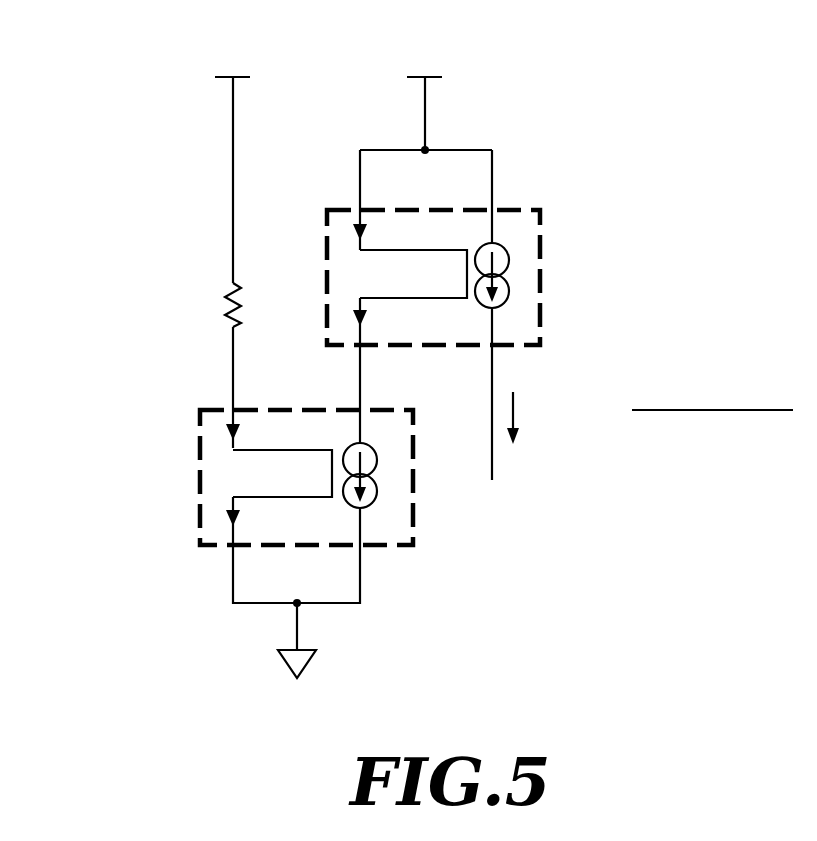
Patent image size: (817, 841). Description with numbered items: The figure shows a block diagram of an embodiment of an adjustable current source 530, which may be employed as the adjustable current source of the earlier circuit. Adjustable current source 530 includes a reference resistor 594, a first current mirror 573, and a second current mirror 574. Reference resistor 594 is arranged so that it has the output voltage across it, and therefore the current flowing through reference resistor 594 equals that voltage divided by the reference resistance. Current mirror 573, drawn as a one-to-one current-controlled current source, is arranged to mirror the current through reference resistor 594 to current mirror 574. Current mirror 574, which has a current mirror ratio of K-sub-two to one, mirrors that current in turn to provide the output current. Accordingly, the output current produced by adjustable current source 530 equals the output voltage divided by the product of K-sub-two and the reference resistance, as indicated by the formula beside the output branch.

The adjustable current source 530 is at (686, 152).
The current mirror 573 is at (197, 421).
The current mirror 574 is at (342, 209).
The reference resistor 594 is at (218, 282).